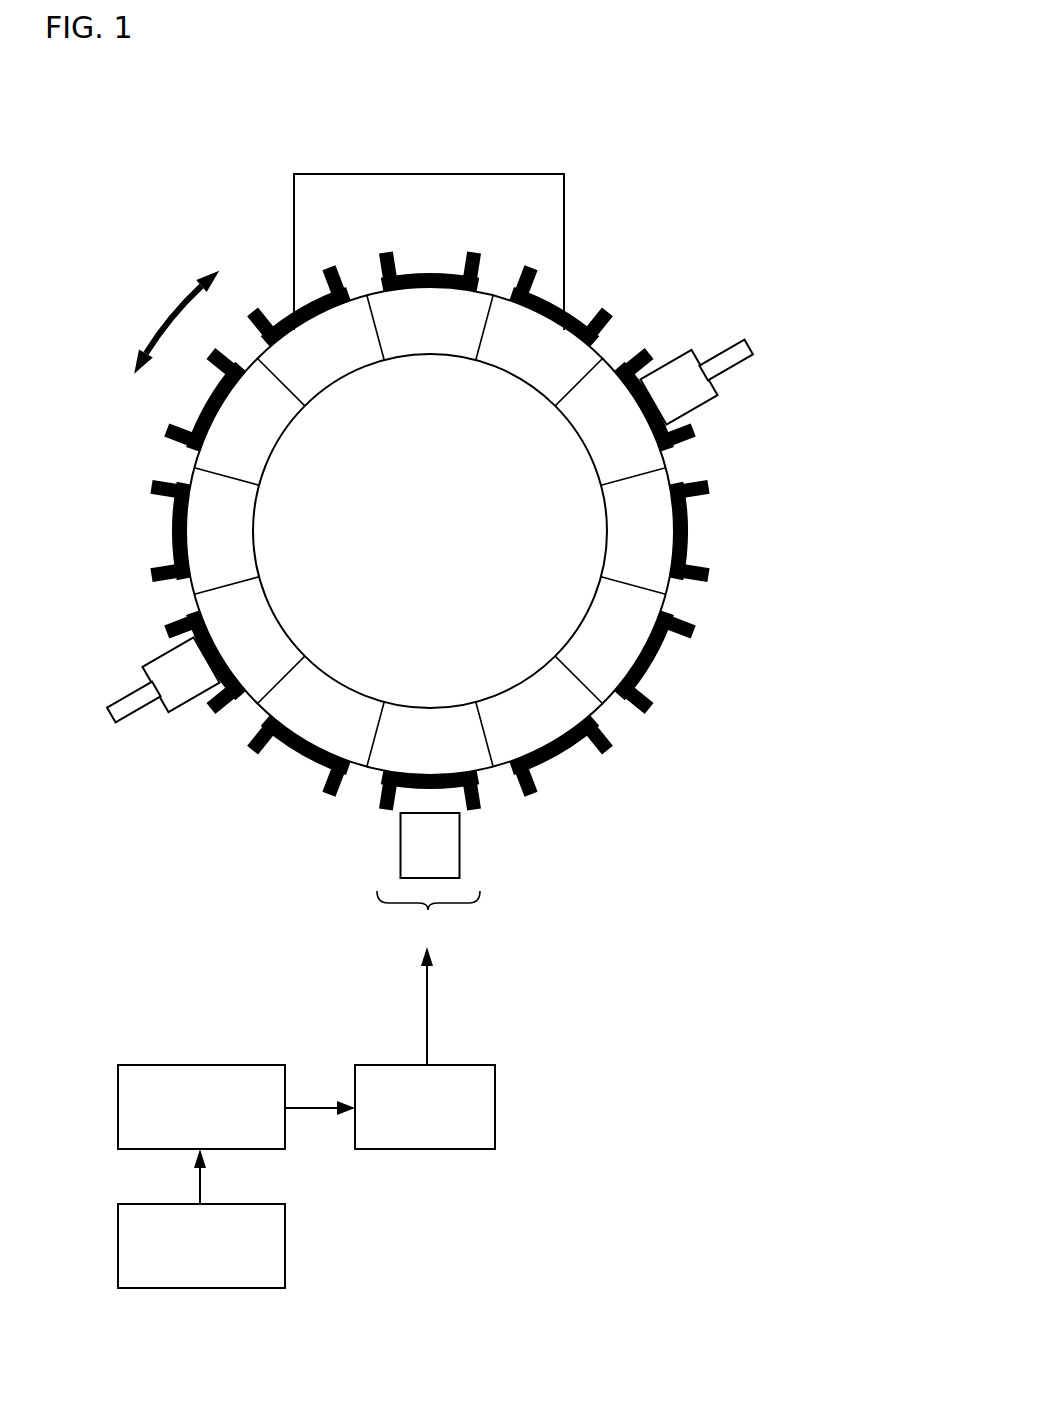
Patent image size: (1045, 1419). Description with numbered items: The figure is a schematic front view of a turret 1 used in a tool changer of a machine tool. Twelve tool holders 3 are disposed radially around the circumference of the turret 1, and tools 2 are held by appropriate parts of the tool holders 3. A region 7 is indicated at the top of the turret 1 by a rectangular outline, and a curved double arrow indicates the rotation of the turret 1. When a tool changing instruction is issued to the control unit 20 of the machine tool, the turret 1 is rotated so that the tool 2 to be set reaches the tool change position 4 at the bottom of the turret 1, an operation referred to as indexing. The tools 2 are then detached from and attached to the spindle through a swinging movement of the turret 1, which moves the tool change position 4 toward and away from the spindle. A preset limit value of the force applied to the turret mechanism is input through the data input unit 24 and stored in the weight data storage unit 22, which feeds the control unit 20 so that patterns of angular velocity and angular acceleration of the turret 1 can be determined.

The turret 1 is at (490, 412).
The tool 2 is at (700, 353).
The tool holder 3 is at (688, 537).
The tool change position 4 is at (428, 909).
The measurement region 7 is at (434, 174).
The control unit 20 is at (495, 1149).
The weight data storage unit 22 is at (132, 1064).
The data input unit 24 is at (132, 1204).